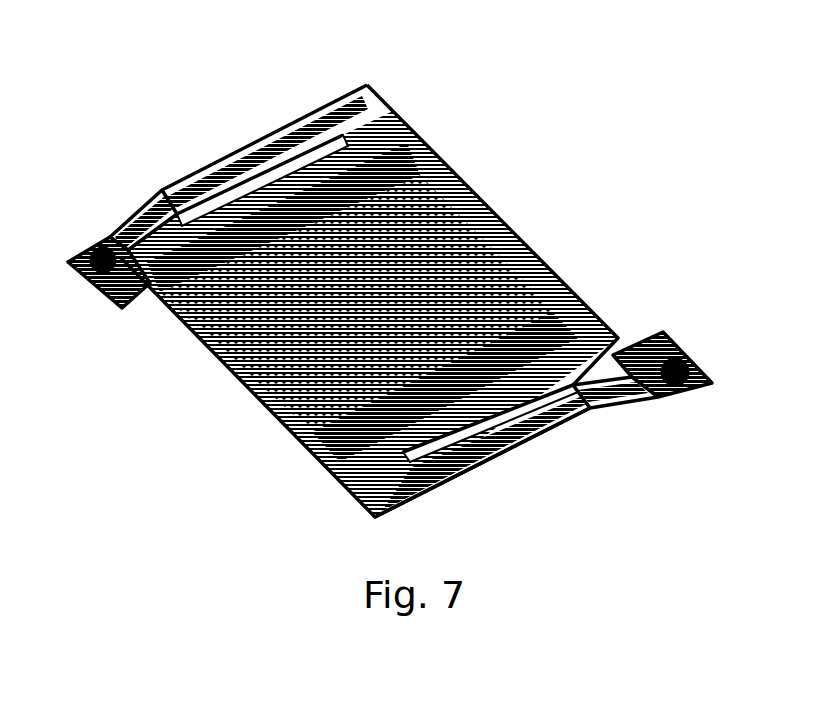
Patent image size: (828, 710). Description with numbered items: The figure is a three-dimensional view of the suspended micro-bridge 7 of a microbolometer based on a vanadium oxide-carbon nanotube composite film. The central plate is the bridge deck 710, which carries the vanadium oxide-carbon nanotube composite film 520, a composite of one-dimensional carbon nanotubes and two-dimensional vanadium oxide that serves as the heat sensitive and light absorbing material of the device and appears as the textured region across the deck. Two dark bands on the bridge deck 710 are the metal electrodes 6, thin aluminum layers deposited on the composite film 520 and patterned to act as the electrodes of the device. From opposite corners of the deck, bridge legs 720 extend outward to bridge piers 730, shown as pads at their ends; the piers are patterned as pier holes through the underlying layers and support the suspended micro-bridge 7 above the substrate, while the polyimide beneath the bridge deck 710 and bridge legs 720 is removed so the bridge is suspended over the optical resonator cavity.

The bridge leg 720 is at (308, 110).
The bridge pier 730 is at (87, 262).
The metal electrode 6 is at (400, 142).
The bridge deck 710 is at (447, 181).
The vanadium oxide-carbon nanotube composite film 520 is at (462, 232).
The suspended micro-bridge 7 is at (555, 283).